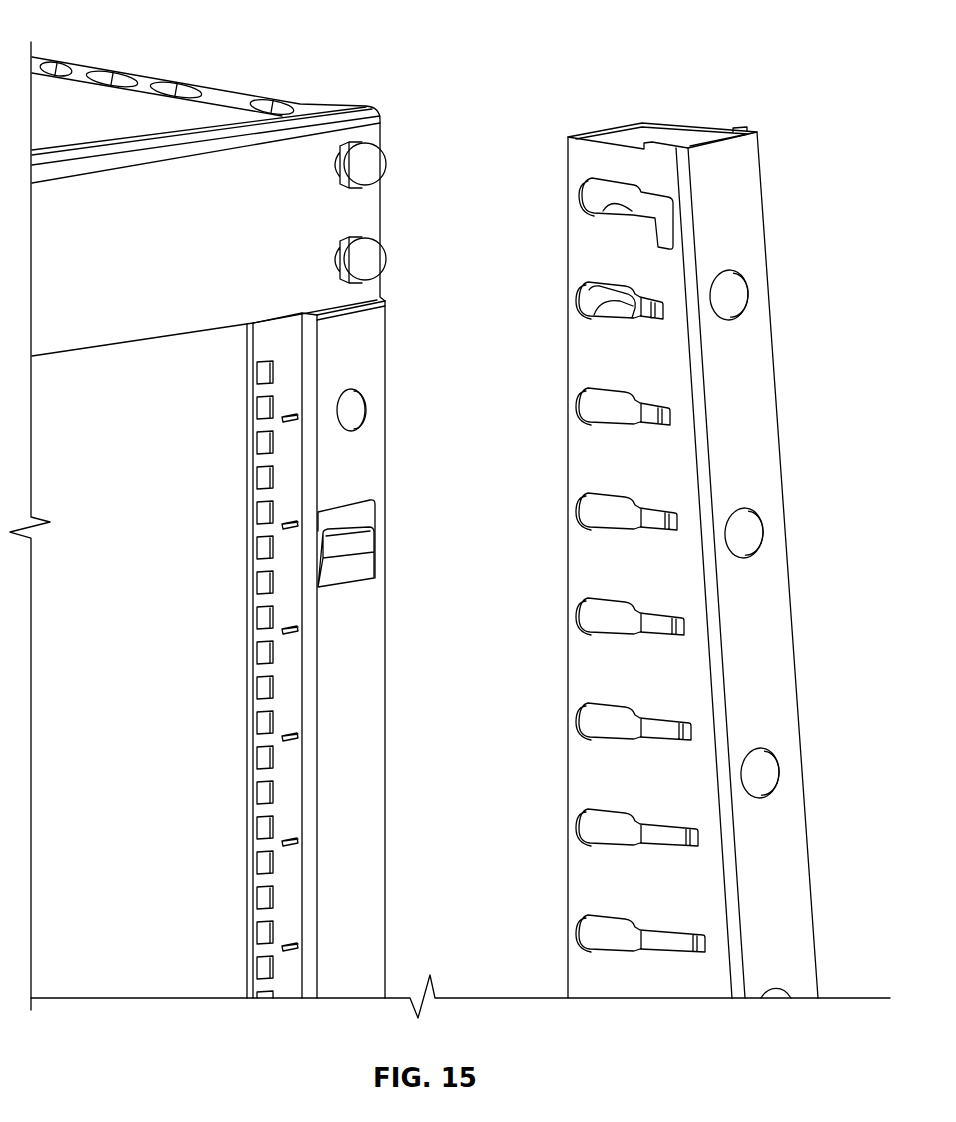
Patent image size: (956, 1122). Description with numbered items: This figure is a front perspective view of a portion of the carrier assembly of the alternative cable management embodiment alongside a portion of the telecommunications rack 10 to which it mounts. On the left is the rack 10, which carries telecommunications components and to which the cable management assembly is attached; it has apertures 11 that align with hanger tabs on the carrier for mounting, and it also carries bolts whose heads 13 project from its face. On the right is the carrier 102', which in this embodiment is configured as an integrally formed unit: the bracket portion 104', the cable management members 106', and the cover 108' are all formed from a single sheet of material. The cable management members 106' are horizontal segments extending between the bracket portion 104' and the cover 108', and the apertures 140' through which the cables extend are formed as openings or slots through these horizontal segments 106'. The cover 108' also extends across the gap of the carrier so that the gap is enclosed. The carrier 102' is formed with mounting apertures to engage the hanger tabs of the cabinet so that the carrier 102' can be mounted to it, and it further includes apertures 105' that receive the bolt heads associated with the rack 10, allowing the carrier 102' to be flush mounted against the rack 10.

The telecommunications rack 10 is at (318, 112).
The nut 13 is at (370, 163).
The apertures 11 is at (363, 543).
The carrier 102' is at (674, 522).
The bracket portion 104' is at (662, 98).
The apertures 105' is at (561, 282).
The cable management members 106' is at (585, 565).
The cover 108' is at (795, 633).
The apertures 140' is at (583, 737).